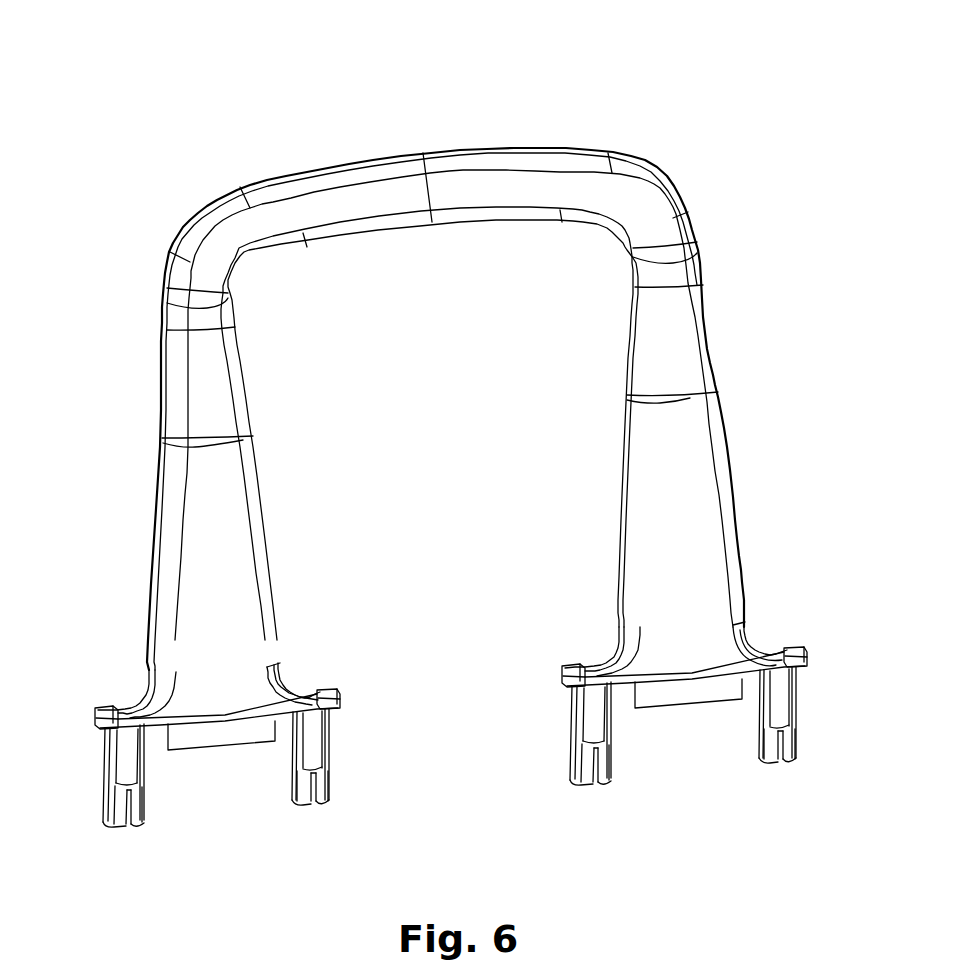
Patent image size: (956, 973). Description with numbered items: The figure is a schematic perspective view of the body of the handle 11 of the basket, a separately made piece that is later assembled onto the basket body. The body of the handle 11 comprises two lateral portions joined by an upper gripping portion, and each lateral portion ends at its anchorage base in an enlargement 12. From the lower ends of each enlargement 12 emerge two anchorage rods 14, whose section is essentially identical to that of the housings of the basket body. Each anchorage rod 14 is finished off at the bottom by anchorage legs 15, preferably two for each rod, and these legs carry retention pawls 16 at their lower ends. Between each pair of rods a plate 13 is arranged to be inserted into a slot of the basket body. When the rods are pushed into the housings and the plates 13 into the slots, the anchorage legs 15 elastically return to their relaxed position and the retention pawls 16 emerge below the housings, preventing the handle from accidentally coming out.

The body of the handle 11 is at (346, 150).
The enlargement 12 is at (157, 693).
The plates 13 is at (221, 745).
The anchorage rods 14 is at (105, 775).
The anchorage legs 15 is at (323, 783).
The retention pawls 16 is at (323, 807).